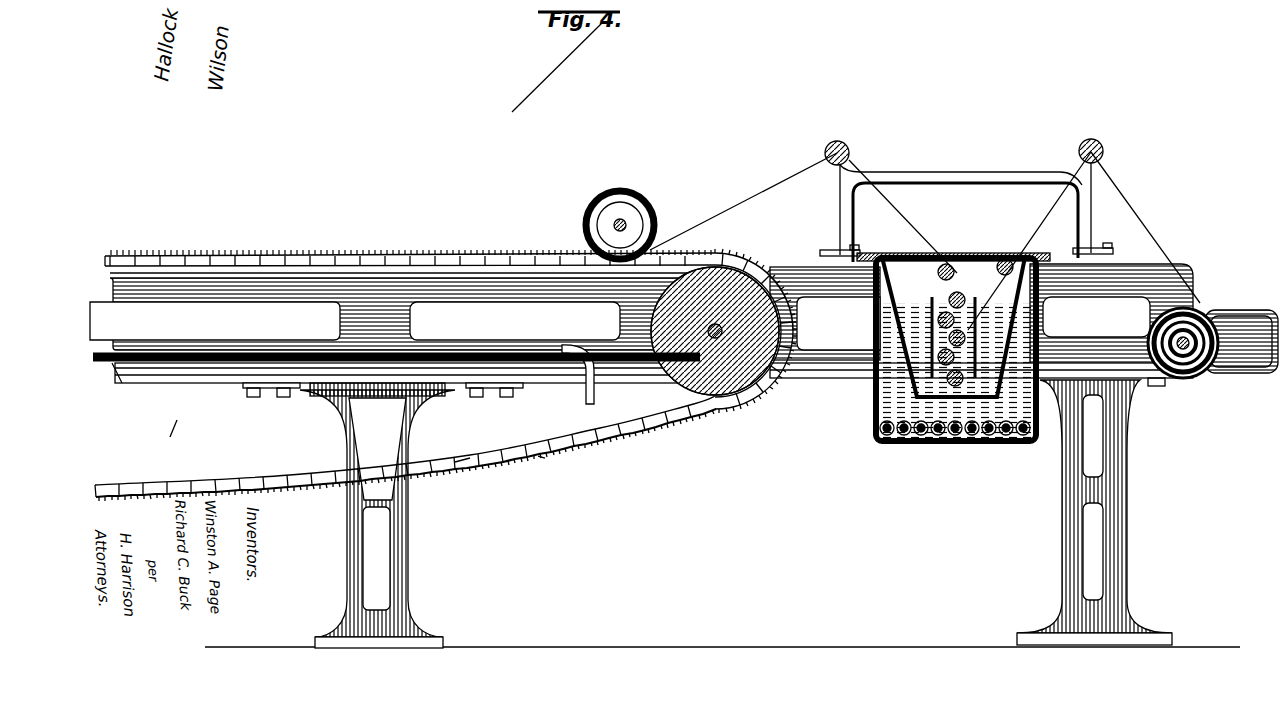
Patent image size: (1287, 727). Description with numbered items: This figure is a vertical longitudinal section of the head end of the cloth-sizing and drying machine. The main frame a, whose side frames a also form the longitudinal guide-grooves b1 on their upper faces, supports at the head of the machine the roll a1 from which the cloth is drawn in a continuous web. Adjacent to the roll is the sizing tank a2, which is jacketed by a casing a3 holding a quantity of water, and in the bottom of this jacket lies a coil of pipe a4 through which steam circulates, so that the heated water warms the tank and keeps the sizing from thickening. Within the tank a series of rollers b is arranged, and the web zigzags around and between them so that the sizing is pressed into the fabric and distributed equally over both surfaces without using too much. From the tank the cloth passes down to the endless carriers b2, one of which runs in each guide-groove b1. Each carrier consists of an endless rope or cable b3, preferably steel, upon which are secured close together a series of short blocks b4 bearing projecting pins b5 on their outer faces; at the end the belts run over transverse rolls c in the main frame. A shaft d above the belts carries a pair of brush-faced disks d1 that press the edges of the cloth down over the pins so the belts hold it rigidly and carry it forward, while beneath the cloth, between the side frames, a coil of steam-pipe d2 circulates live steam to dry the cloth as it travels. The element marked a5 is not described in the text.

The main frame a is at (1262, 308).
The roll a1 is at (1218, 372).
The sizing tank a2 is at (953, 327).
The casing a3 is at (1097, 149).
The coil of pipe a4 is at (975, 440).
The tank a5 is at (872, 410).
The rollers b is at (958, 296).
The guide-groove b1 is at (540, 462).
The endless carrier b2 is at (536, 457).
The endless rope or cable b3 is at (502, 262).
The blocks b4 is at (458, 462).
The projecting pins b5 is at (182, 442).
The transverse rolls c is at (715, 332).
The shaft d is at (606, 228).
The disks or wheels d1 is at (640, 225).
The coil of steam-pipe d2 is at (207, 330).